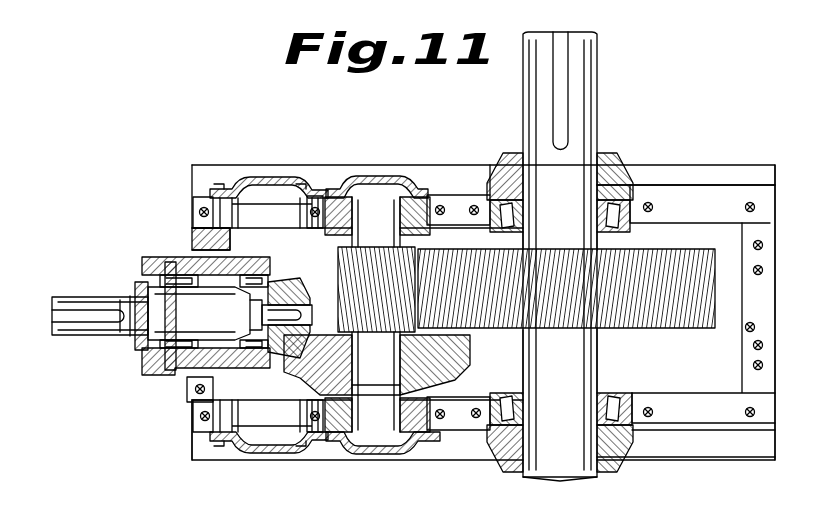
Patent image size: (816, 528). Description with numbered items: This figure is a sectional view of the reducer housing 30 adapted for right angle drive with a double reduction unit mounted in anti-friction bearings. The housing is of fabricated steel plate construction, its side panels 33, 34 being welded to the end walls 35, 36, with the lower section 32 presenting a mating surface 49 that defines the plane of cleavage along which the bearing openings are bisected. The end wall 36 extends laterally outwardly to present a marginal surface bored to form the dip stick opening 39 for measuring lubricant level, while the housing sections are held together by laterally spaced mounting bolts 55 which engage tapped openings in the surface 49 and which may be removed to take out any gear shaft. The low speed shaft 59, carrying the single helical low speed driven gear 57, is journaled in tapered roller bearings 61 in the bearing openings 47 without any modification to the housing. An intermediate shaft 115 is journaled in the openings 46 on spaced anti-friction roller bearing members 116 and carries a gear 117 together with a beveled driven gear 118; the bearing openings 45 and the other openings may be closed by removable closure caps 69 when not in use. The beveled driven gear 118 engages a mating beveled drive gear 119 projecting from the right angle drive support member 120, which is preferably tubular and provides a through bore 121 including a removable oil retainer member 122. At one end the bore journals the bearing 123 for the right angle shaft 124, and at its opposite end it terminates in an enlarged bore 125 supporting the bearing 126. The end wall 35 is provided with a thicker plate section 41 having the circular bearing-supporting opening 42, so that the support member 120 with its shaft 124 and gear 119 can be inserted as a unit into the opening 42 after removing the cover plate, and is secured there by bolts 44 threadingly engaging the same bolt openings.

The reducer housing 30 is at (682, 174).
The lower section 32 is at (742, 181).
The side panel 33 is at (760, 190).
The side panel 34 is at (734, 432).
The end wall 35 is at (186, 400).
The end wall 36 is at (748, 378).
The dip stick opening 39 is at (748, 328).
The thicker plate section 41 is at (190, 240).
The bearing-supporting opening 42 is at (208, 270).
The bolts 44 is at (172, 394).
The bearing opening 45 is at (214, 190).
The bearing opening 46 is at (428, 228).
The bearing opening 47 is at (620, 226).
The mating surface 49 is at (648, 188).
The mounting bolts 55 is at (746, 208).
The low speed driven gear 57 is at (680, 326).
The low speed shaft 59 is at (597, 80).
The tapered roller bearings 61 is at (510, 228).
The removable closure caps 69 is at (283, 178).
The intermediate shaft 115 is at (385, 425).
The bearing members 116 is at (410, 198).
The gear 117 is at (342, 253).
The beveled driven gear 118 is at (334, 374).
The beveled drive gear 119 is at (297, 288).
The right angle drive support member 120 is at (240, 272).
The through bore 121 is at (135, 362).
The oil retainer member 122 is at (122, 342).
The bearing 123 is at (172, 258).
The right angle shaft 124 is at (64, 332).
The enlarged bore 125 is at (262, 362).
The bearing 126 is at (244, 360).